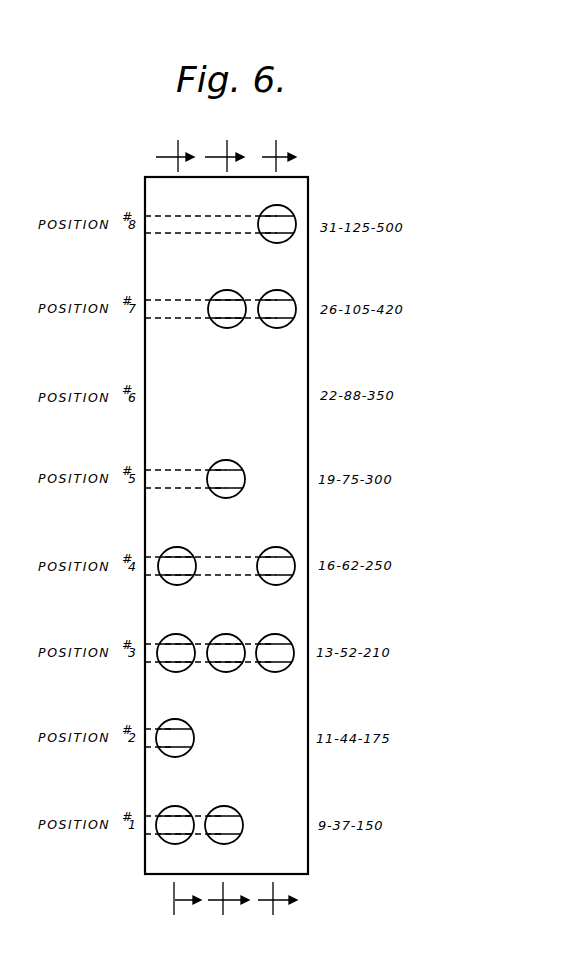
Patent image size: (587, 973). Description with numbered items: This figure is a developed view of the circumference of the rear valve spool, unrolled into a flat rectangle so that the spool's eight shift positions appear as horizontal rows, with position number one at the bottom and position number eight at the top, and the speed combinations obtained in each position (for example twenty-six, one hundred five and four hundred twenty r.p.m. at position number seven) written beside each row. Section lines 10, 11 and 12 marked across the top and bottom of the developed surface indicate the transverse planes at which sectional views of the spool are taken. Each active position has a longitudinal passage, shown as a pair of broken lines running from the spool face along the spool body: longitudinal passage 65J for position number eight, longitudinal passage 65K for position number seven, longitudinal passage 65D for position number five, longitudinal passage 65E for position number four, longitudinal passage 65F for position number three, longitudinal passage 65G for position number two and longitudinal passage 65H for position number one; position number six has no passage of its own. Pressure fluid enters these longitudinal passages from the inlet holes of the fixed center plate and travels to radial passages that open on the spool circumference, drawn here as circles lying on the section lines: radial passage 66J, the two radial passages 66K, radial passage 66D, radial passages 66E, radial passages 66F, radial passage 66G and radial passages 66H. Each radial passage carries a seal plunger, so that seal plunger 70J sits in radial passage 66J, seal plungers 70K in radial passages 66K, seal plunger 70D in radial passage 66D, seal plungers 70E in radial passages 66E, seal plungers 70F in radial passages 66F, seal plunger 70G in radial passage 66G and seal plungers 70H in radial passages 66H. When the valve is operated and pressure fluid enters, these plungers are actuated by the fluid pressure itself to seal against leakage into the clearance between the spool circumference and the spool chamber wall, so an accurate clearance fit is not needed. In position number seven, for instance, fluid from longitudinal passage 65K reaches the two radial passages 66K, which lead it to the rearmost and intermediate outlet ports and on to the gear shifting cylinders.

The section line 10 is at (174, 530).
The section line 11 is at (227, 530).
The section line 12 is at (281, 530).
The longitudinal passage 65J is at (161, 233).
The longitudinal passage 65K is at (161, 318).
The longitudinal passage 65D is at (161, 488).
The longitudinal passage 65E is at (161, 575).
The longitudinal passage 65F is at (161, 662).
The longitudinal passage 65G is at (161, 747).
The longitudinal passage 65H is at (161, 834).
The radial passage 66J is at (251, 235).
The seal plunger 70J is at (277, 235).
The radial passages 66K is at (250, 320).
The seal plungers 70K is at (224, 335).
The radial passage 66D is at (242, 468).
The seal plunger 70D is at (205, 455).
The radial passages 66E is at (226, 553).
The seal plungers 70E is at (196, 538).
The radial passages 66F is at (225, 639).
The seal plungers 70F is at (206, 623).
The radial passage 66G is at (225, 734).
The seal plunger 70G is at (188, 727).
The radial passages 66H is at (211, 809).
The seal plungers 70H is at (192, 791).